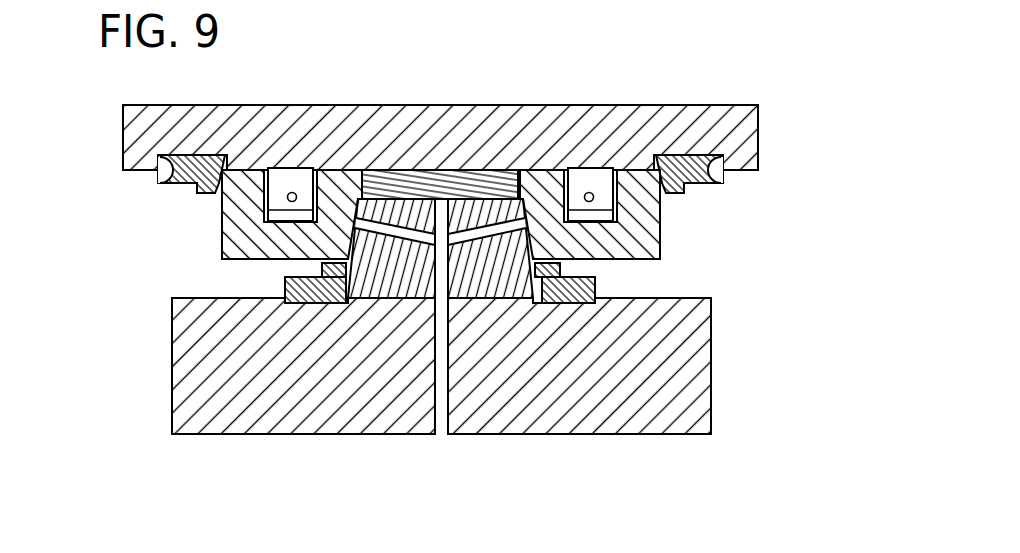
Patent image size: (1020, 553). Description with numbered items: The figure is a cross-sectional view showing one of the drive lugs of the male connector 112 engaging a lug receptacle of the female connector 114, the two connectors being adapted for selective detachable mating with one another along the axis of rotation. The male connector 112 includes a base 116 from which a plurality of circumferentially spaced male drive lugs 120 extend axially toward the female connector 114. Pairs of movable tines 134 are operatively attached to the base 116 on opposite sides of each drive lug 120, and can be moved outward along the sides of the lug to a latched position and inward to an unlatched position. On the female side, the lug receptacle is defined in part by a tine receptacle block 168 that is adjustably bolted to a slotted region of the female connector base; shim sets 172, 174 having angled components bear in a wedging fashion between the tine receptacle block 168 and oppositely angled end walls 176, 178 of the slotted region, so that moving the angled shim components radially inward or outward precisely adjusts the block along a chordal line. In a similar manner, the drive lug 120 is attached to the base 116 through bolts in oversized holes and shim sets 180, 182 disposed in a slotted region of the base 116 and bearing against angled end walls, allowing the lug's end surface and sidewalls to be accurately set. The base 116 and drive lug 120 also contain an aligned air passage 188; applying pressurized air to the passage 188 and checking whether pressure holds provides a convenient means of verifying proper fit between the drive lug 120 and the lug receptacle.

The female connector 114 is at (765, 130).
The movable tines 134 is at (296, 177).
The angled end wall 178 is at (176, 168).
The angled end wall 176 is at (705, 185).
The tine receptacle block 168 is at (440, 217).
The shim set 174 is at (185, 203).
The shim set 172 is at (695, 203).
The male drive lug 120 is at (393, 283).
The shim set 182 is at (266, 268).
The shim set 180 is at (612, 270).
The male connector 112 is at (506, 416).
The base 116 is at (658, 407).
The air passage 188 is at (443, 440).